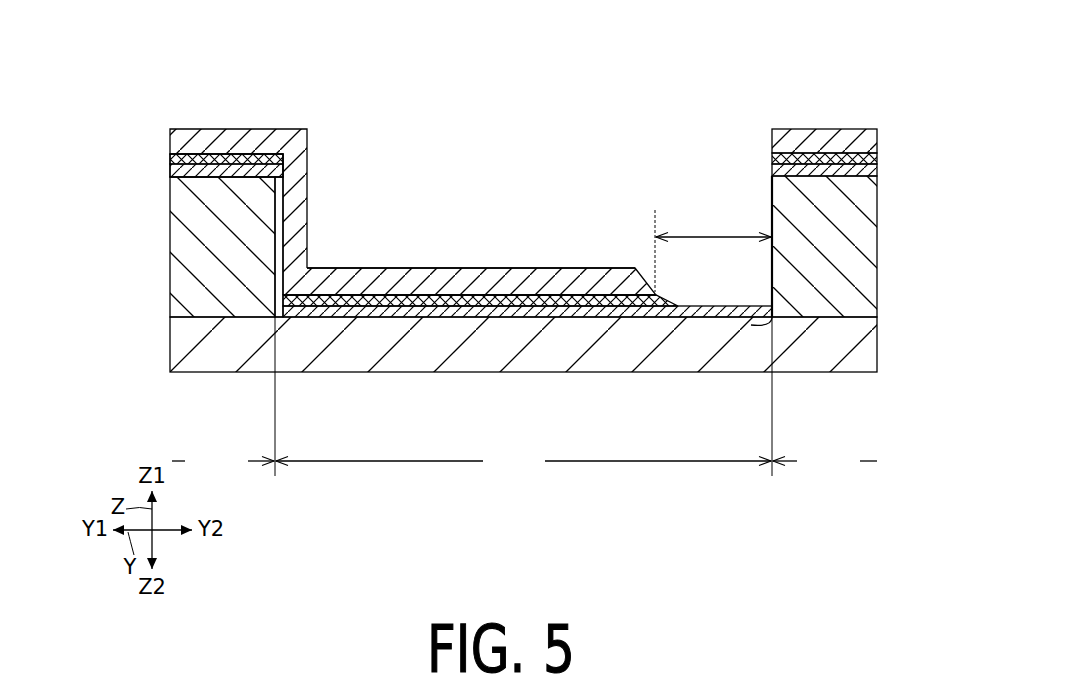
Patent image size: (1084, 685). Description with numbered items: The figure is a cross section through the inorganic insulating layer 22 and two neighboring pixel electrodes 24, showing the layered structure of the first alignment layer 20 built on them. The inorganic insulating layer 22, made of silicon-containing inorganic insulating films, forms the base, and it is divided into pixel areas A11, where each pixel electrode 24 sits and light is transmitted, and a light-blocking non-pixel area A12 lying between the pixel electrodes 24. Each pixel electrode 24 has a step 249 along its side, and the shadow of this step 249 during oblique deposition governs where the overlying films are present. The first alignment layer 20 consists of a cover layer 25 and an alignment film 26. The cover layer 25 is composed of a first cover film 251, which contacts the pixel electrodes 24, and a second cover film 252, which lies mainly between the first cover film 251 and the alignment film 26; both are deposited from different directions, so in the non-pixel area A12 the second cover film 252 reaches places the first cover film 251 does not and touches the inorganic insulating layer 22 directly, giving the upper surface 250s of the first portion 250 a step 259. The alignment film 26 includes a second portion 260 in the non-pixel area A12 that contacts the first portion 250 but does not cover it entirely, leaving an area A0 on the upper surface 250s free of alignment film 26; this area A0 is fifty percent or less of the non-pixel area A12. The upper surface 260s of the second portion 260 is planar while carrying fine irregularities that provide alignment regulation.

The first alignment layer 20 is at (203, 38).
The inorganic insulating layer 22 is at (873, 342).
The pixel electrode 24 is at (215, 267).
The cover layer 25 is at (173, 70).
The alignment film 26 is at (287, 128).
The step 249 is at (276, 194).
The first portion 250 is at (536, 326).
The upper surface of the first portion 250s is at (380, 294).
The first cover film 251 is at (237, 166).
The second cover film 252 is at (198, 156).
The step 259 is at (678, 308).
The second portion 260 is at (557, 284).
The upper surface of the second portion 260s is at (458, 268).
The area A0 is at (713, 251).
The pixel area A11 is at (524, 396).
The non-pixel area A12 is at (523, 461).